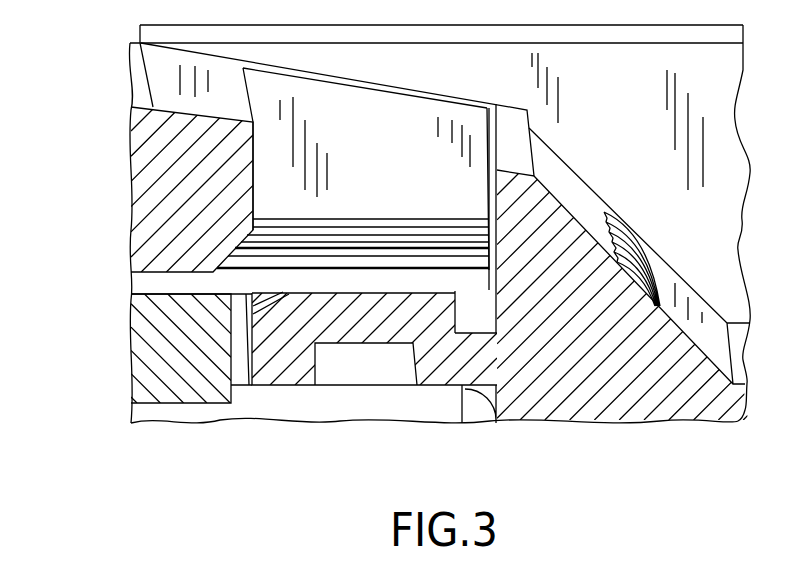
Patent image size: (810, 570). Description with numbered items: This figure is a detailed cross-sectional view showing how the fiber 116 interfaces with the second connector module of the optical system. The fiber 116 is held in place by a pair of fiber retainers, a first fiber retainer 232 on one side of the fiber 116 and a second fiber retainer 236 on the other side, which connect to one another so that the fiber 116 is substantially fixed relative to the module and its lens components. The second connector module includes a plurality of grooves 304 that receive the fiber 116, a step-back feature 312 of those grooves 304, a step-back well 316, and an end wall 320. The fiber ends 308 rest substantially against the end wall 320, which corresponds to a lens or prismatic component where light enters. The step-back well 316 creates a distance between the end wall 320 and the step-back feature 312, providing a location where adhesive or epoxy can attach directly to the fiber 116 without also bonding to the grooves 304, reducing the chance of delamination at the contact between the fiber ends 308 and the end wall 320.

The fiber 116 is at (147, 282).
The first fiber retainer 232 is at (158, 352).
The second fiber retainer 236 is at (147, 172).
The grooves 304 is at (360, 345).
The fiber ends 308 is at (500, 257).
The step-back feature 312 is at (461, 317).
The step-back well 316 is at (481, 317).
The end wall 320 is at (490, 183).